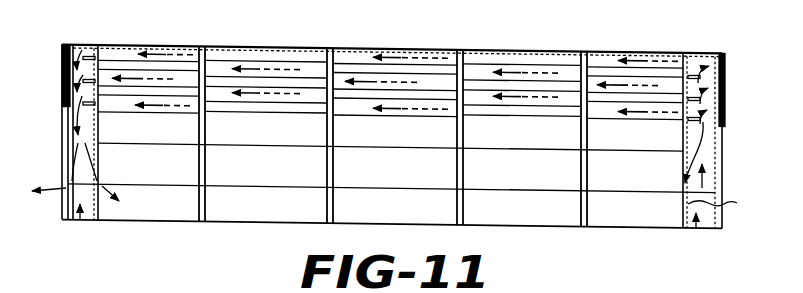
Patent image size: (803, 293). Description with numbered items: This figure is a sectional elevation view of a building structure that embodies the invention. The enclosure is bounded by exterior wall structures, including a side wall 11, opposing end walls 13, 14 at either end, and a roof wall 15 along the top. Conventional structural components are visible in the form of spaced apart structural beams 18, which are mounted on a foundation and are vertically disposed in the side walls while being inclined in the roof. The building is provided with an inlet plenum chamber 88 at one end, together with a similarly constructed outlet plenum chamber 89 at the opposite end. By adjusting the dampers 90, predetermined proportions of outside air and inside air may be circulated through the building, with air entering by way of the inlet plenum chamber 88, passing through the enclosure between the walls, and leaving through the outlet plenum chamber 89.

The side wall 11 is at (268, 227).
The end wall 13 is at (60, 129).
The end wall 14 is at (708, 230).
The roof wall 15 is at (190, 42).
The structural beams 18 is at (454, 169).
The inlet plenum chamber 88 is at (694, 231).
The outlet plenum chamber 89 is at (78, 225).
The dampers 90 is at (70, 197).